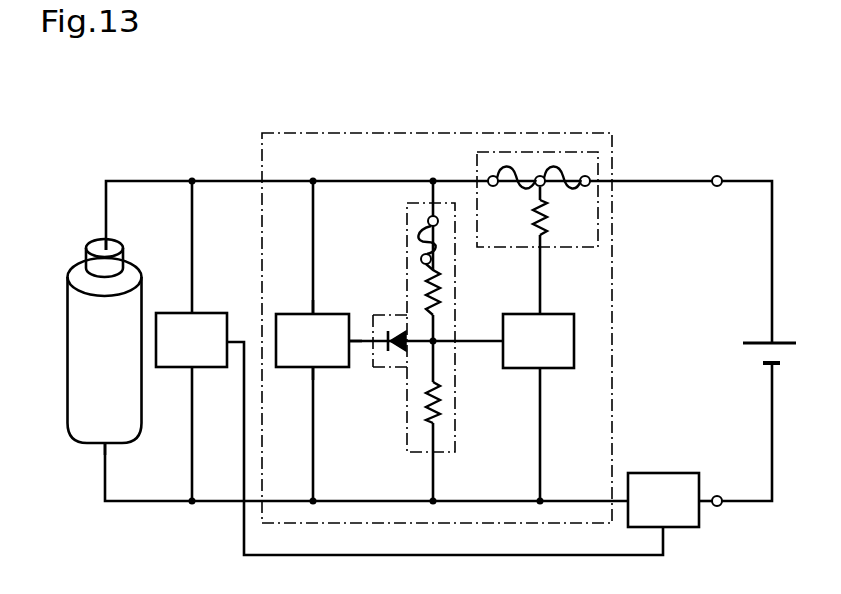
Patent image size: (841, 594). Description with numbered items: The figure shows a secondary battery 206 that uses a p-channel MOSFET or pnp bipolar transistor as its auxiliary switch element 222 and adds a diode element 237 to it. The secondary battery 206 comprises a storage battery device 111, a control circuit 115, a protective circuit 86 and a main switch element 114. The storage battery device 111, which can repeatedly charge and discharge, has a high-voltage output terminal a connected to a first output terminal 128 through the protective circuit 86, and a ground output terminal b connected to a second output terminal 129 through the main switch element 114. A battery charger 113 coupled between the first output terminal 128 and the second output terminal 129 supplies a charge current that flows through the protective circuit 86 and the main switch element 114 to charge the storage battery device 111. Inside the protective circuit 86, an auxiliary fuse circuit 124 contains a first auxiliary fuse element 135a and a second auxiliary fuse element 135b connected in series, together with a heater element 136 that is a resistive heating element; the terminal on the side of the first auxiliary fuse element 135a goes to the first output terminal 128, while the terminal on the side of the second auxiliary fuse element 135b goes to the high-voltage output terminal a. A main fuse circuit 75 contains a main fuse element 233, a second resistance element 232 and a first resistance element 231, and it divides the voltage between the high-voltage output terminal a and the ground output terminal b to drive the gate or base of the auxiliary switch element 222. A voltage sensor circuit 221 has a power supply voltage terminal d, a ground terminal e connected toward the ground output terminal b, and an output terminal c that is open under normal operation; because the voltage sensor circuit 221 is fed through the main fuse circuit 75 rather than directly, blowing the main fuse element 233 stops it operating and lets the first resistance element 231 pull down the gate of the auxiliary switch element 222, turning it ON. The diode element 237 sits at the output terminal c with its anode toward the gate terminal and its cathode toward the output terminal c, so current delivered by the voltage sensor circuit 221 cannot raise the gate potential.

The secondary battery 206 is at (200, 115).
The protective circuit 86 is at (387, 133).
The main fuse circuit 75 is at (456, 275).
The auxiliary fuse circuit 124 is at (600, 168).
The storage battery device 111 is at (68, 262).
The high-voltage output terminal a is at (110, 240).
The ground output terminal b is at (106, 446).
The output terminal c is at (350, 343).
The power supply voltage terminal d is at (318, 313).
The ground terminal e is at (305, 368).
The control circuit 115 is at (170, 370).
The voltage sensor circuit 221 is at (292, 313).
The auxiliary switch element 222 is at (575, 332).
The main switch element 114 is at (665, 472).
The diode element 237 is at (393, 353).
The main fuse element 233 is at (417, 243).
The second resistance element 232 is at (423, 297).
The first resistance element 231 is at (440, 408).
The first auxiliary fuse element 135a is at (568, 170).
The second auxiliary fuse element 135b is at (502, 162).
The heater element 136 is at (555, 220).
The first output terminal 128 is at (717, 176).
The second output terminal 129 is at (717, 506).
The battery charger 113 is at (762, 340).